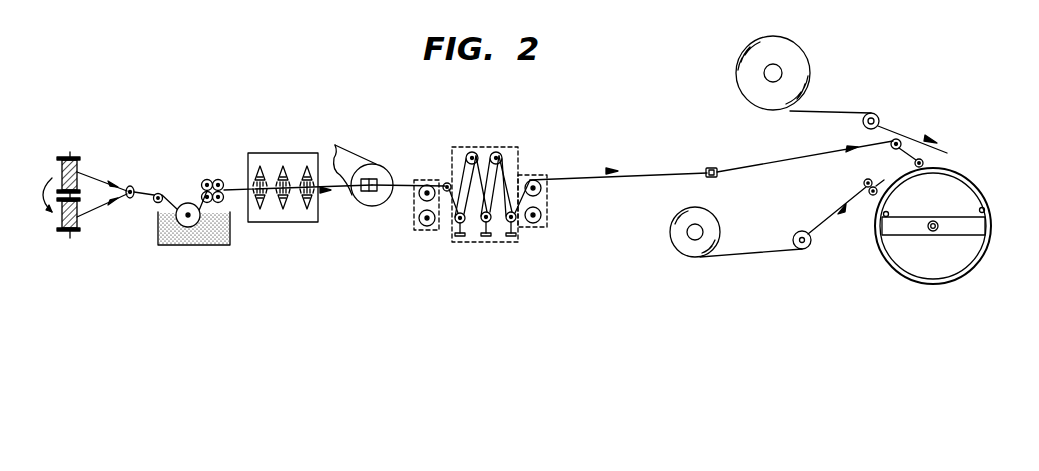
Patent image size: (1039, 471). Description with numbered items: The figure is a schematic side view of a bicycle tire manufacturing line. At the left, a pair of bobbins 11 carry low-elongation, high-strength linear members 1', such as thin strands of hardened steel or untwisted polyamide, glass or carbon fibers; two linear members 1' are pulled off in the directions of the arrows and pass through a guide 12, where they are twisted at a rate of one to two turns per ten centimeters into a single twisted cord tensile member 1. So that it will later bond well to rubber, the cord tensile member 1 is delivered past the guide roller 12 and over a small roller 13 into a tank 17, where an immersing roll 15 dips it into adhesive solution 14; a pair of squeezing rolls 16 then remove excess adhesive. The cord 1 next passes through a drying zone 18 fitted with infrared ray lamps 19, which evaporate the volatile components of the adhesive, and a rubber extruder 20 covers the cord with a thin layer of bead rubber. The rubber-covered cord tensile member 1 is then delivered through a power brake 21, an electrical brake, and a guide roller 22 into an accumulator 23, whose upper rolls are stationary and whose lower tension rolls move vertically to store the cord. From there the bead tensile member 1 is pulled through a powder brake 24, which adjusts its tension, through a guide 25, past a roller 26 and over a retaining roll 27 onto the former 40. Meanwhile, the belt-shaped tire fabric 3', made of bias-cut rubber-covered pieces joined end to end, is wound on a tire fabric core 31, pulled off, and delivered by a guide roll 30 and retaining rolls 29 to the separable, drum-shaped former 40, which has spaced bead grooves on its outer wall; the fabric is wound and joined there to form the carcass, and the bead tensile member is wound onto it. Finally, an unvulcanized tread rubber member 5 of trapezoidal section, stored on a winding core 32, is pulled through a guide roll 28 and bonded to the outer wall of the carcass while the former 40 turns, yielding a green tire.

The twisted cord tensile member 1 is at (525, 175).
The linear members 1' is at (102, 191).
The belt-shaped tire fabric 3' is at (783, 239).
The unvulcanized tread rubber member 5 is at (898, 133).
The bobbins 11 is at (69, 157).
The guide 12 is at (130, 186).
The guide roller 13 is at (155, 203).
The adhesive solution 14 is at (178, 244).
The immersing roll 15 is at (188, 203).
The squeezing rolls 16 is at (207, 179).
The tank 17 is at (220, 245).
The drying zone 18 is at (280, 222).
The infrared ray lamps 19 is at (279, 165).
The rubber extruder 20 is at (372, 193).
The power brake 21 is at (422, 231).
The guide roller 22 is at (445, 183).
The accumulator 23 is at (470, 147).
The powder brake 24 is at (537, 224).
The guide 25 is at (710, 168).
The guide roller 26 is at (891, 147).
The retaining roll 27 is at (915, 163).
The guide roll 28 is at (871, 113).
The retaining rolls 29 is at (864, 183).
The guide roll 30 is at (810, 246).
The tire fabric core 31 is at (700, 232).
The winding core 32 is at (782, 70).
The former 40 is at (991, 213).